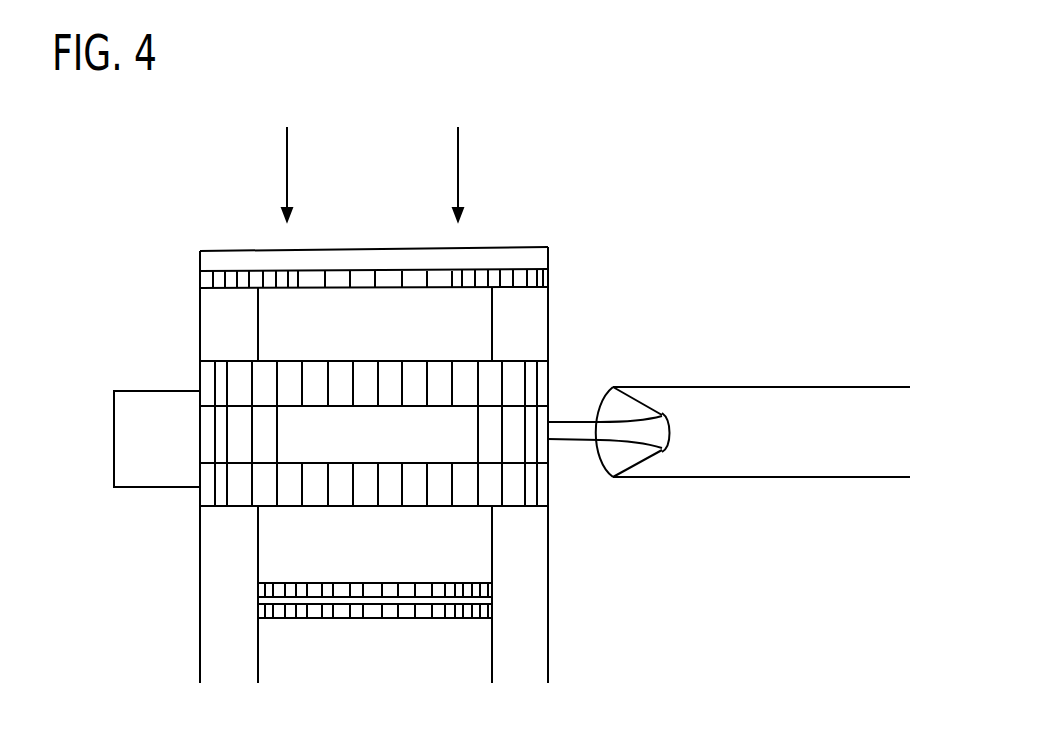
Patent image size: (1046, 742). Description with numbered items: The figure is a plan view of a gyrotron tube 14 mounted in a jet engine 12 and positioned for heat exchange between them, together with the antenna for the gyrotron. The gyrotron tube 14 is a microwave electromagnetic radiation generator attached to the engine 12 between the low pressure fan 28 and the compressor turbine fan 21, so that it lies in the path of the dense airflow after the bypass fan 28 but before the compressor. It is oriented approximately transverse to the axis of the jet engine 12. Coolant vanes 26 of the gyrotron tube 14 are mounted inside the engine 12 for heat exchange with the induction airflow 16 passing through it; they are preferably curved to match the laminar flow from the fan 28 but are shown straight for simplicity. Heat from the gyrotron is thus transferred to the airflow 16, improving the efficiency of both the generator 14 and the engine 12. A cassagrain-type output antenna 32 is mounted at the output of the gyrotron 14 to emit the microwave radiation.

The jet engine 12 is at (549, 550).
The gyrotron tube 14 is at (432, 452).
The induction airflow 16 is at (287, 175).
The compressor turbine fan 21 is at (493, 608).
The coolant vanes 26 is at (317, 506).
The low pressure fan 28 is at (485, 247).
The output antenna 32 is at (602, 418).